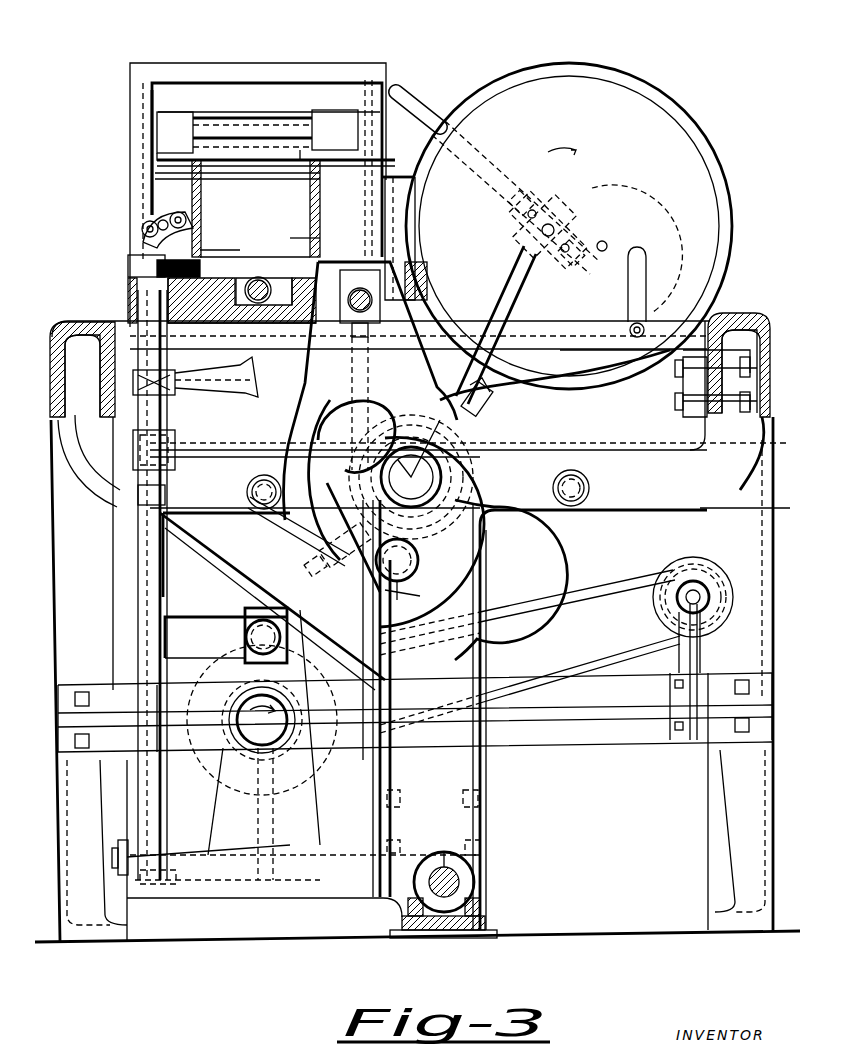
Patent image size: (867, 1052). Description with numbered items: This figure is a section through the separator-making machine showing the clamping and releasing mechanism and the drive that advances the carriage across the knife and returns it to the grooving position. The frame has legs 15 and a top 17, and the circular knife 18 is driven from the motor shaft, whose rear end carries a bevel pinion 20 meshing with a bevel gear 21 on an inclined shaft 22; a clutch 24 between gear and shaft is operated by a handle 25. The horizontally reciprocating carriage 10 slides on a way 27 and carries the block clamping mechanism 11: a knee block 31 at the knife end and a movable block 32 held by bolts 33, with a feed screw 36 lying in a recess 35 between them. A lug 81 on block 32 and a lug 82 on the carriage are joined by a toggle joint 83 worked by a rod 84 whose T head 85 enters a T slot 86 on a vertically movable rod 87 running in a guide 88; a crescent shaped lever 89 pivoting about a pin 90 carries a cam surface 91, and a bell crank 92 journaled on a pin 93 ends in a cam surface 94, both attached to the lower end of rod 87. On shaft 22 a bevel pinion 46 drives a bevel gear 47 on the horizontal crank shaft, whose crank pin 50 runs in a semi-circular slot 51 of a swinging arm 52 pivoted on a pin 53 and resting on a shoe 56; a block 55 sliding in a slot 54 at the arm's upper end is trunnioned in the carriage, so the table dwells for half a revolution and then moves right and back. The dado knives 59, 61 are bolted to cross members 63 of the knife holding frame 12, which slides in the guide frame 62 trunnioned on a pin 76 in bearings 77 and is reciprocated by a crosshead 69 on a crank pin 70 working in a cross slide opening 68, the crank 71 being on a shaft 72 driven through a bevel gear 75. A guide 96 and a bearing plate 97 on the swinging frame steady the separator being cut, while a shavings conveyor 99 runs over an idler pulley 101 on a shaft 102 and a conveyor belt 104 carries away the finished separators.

The carriage 10 is at (298, 350).
The block clamping mechanism 11 is at (212, 212).
The knife holding frame 12 is at (160, 120).
The legs 15 is at (110, 915).
The top 17 is at (75, 320).
The circular knife 18 is at (630, 70).
The bevel pinion 20 is at (595, 225).
The bevel gear 21 is at (640, 252).
The shaft 22 is at (515, 385).
The clutch 24 is at (610, 245).
The handle 25 is at (402, 92).
The way 27 is at (660, 320).
The knee block 31 is at (300, 238).
The block 32 is at (220, 242).
The bolts 33 is at (160, 262).
The recess 35 is at (275, 283).
The screw 36 is at (255, 285).
The bevel pinion 46 is at (480, 400).
The bevel gear 47 is at (490, 440).
The crank pin 50 is at (420, 566).
The semi-circular slot 51 is at (347, 502).
The swinging arm 52 is at (440, 753).
The pin 53 is at (450, 875).
The slot 54 is at (355, 315).
The block 55 is at (358, 345).
The shoe 56 is at (480, 905).
The dado knife 59 is at (313, 150).
The dado knife 61 is at (290, 118).
The guide frame 62 is at (135, 95).
The cross members 63 is at (230, 103).
The cross slide opening 68 is at (165, 620).
The crosshead 69 is at (245, 608).
The crank pin 70 is at (250, 636).
The crank 71 is at (250, 750).
The shaft 72 is at (262, 720).
The bevel gear 75 is at (330, 745).
The pin 76 is at (120, 855).
The bearings 77 is at (135, 880).
The lug 81 is at (178, 218).
The lug 82 is at (128, 253).
The toggle joint 83 is at (150, 225).
The rod 84 is at (155, 293).
The T head 85 is at (175, 387).
The T slot 86 is at (225, 365).
The rod 87 is at (130, 515).
The guide 88 is at (140, 458).
The crescent shaped lever 89 is at (225, 535).
The pin 90 is at (572, 488).
The cam surface 91 is at (340, 520).
The bell crank 92 is at (290, 505).
The pin 93 is at (250, 492).
The cam surface 94 is at (500, 630).
The guide 96 is at (398, 210).
The bearing plate 97 is at (430, 285).
The conveyor 99 is at (582, 663).
The idler pulley 101 is at (680, 562).
The shaft 102 is at (690, 600).
The conveyor belt 104 is at (790, 440).